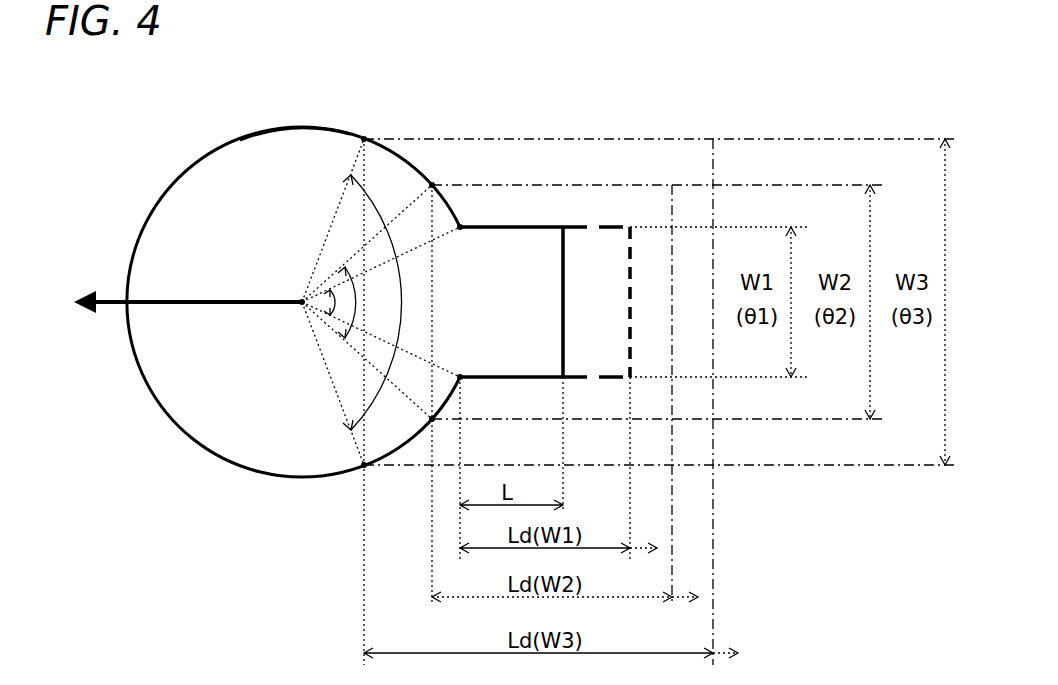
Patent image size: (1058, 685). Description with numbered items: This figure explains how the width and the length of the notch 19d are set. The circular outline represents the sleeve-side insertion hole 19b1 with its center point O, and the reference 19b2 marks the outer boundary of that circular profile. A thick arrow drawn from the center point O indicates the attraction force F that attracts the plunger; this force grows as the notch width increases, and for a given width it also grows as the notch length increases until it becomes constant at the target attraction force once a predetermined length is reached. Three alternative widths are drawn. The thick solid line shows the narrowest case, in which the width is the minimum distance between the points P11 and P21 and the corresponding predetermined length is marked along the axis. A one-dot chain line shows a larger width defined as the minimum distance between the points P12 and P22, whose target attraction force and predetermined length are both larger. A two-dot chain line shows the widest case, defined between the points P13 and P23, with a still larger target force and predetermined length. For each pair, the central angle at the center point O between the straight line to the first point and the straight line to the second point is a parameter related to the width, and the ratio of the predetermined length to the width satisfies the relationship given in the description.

The sleeve-side insertion hole 19b1 is at (155, 208).
The outer peripheral surface of ball portion 19b2 is at (296, 127).
The notch 19d is at (530, 227).
The attraction force F is at (175, 304).
The center point of the sleeve-side insertion hole O is at (302, 300).
The point P11 is at (460, 227).
The point P12 is at (432, 185).
The point P13 is at (364, 139).
The point P21 is at (460, 377).
The point P22 is at (432, 419).
The point P23 is at (364, 465).